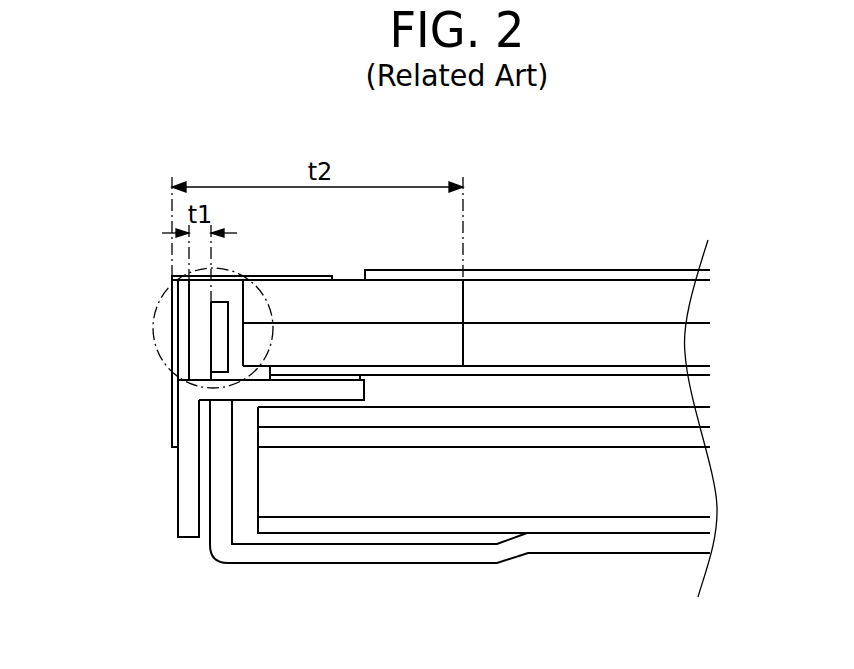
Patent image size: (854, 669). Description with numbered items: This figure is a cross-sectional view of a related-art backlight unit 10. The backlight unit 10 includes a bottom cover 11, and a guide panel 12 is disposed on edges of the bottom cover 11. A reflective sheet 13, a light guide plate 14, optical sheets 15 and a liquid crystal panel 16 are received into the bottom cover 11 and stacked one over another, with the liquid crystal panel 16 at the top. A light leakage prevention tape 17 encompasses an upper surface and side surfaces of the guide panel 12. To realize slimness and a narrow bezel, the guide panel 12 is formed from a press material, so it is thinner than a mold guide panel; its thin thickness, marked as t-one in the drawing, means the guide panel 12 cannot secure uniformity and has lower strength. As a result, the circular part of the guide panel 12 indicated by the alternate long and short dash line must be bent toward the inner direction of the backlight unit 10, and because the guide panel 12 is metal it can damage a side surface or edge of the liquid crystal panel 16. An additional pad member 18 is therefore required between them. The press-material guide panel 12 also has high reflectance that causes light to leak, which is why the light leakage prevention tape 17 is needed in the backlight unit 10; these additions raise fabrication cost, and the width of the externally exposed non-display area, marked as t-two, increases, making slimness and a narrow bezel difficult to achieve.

The backlight unit 10 is at (130, 167).
The bottom cover 11 is at (390, 555).
The guide panel 12 is at (180, 505).
The reflective sheet 13 is at (710, 527).
The light guide plate 14 is at (708, 485).
The optical sheets 15 is at (722, 403).
The liquid crystal panel 16 is at (722, 272).
The light leakage prevention tape 17 is at (179, 363).
The pad member 18 is at (218, 328).